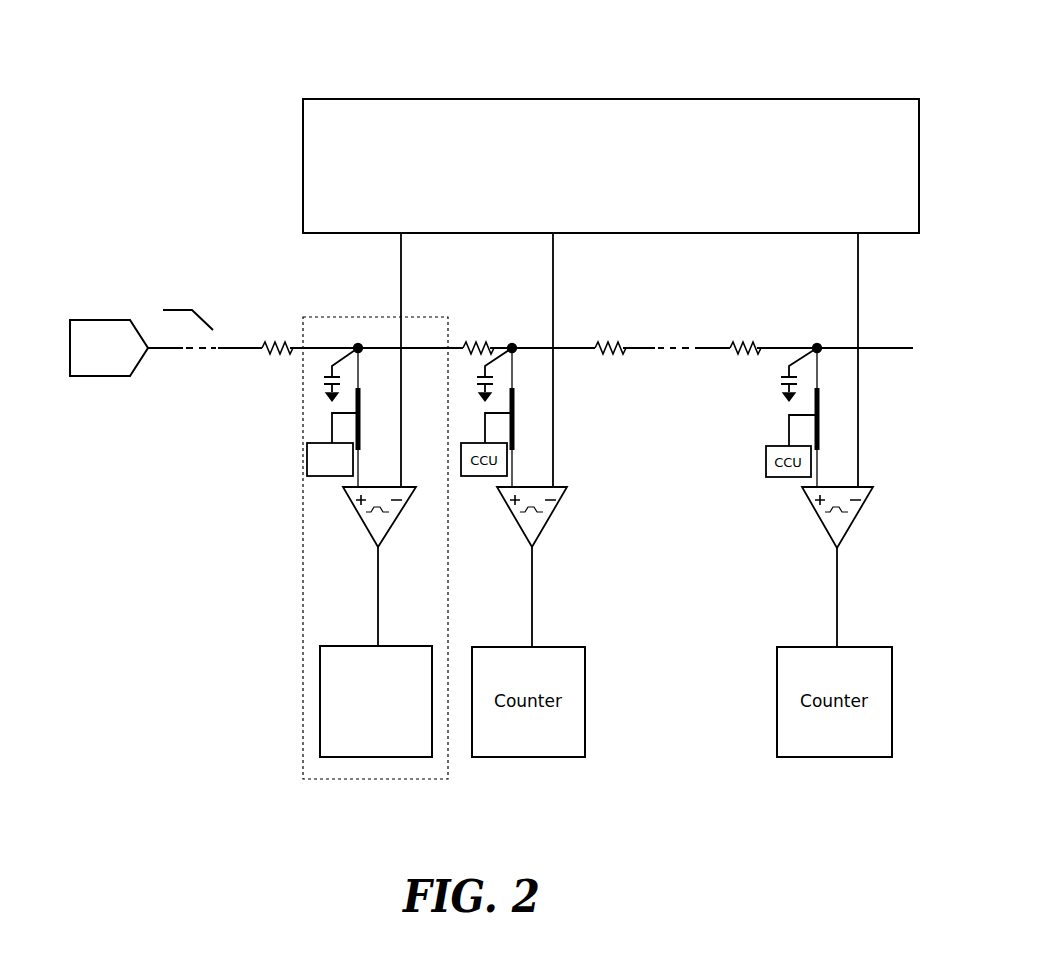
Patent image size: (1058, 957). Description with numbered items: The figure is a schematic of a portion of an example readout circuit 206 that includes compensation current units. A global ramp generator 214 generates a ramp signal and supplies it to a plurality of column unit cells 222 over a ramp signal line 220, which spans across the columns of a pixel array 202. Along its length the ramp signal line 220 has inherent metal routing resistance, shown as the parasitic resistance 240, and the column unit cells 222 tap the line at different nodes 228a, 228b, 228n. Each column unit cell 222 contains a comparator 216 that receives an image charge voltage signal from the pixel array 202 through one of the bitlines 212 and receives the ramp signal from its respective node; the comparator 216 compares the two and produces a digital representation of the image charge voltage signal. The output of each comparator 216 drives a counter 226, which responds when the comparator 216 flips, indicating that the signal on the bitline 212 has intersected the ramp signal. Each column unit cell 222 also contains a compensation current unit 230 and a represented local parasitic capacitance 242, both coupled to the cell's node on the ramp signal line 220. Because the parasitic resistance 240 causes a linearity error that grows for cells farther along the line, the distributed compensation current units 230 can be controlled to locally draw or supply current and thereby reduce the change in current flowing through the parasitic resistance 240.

The pixel array 202 is at (621, 98).
The readout circuit 206 is at (135, 148).
The bitline 212 is at (860, 248).
The global ramp generator 214 is at (103, 318).
The comparator 216 is at (350, 520).
The ramp signal line 220 is at (245, 345).
The column unit cell 222 is at (303, 684).
The counter 226 is at (320, 740).
The node 228a is at (358, 345).
The node 228b is at (512, 345).
The node 228n is at (817, 345).
The compensation current unit 230 is at (306, 458).
The parasitic resistance 240 is at (280, 313).
The local parasitic capacitance 242 is at (318, 382).